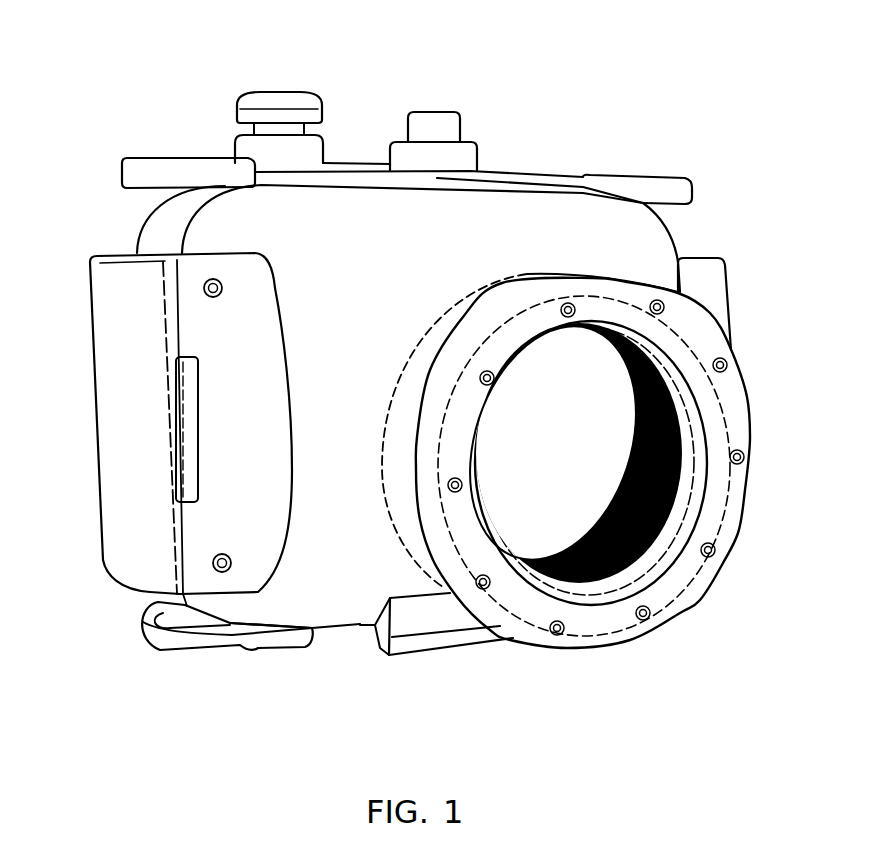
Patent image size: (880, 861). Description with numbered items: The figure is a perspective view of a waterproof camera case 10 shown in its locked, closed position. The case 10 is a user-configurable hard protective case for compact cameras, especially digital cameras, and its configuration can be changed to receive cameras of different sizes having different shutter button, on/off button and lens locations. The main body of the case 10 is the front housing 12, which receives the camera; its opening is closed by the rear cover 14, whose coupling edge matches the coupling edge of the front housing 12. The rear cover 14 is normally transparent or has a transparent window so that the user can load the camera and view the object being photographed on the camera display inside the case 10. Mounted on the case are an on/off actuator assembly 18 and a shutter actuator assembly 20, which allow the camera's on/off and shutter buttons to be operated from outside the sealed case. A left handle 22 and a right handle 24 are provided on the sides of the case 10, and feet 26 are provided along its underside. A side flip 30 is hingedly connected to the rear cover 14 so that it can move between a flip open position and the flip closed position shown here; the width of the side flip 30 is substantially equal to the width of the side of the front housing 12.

The waterproof camera case 10 is at (414, 372).
The front housing 12 is at (648, 235).
The rear cover 14 is at (148, 232).
The on/off actuator assembly 18 is at (437, 112).
The shutter actuator assembly 20 is at (272, 91).
The left handle 22 is at (727, 286).
The right handle 24 is at (192, 300).
The feet 26 is at (218, 652).
The side flip 30 is at (112, 432).